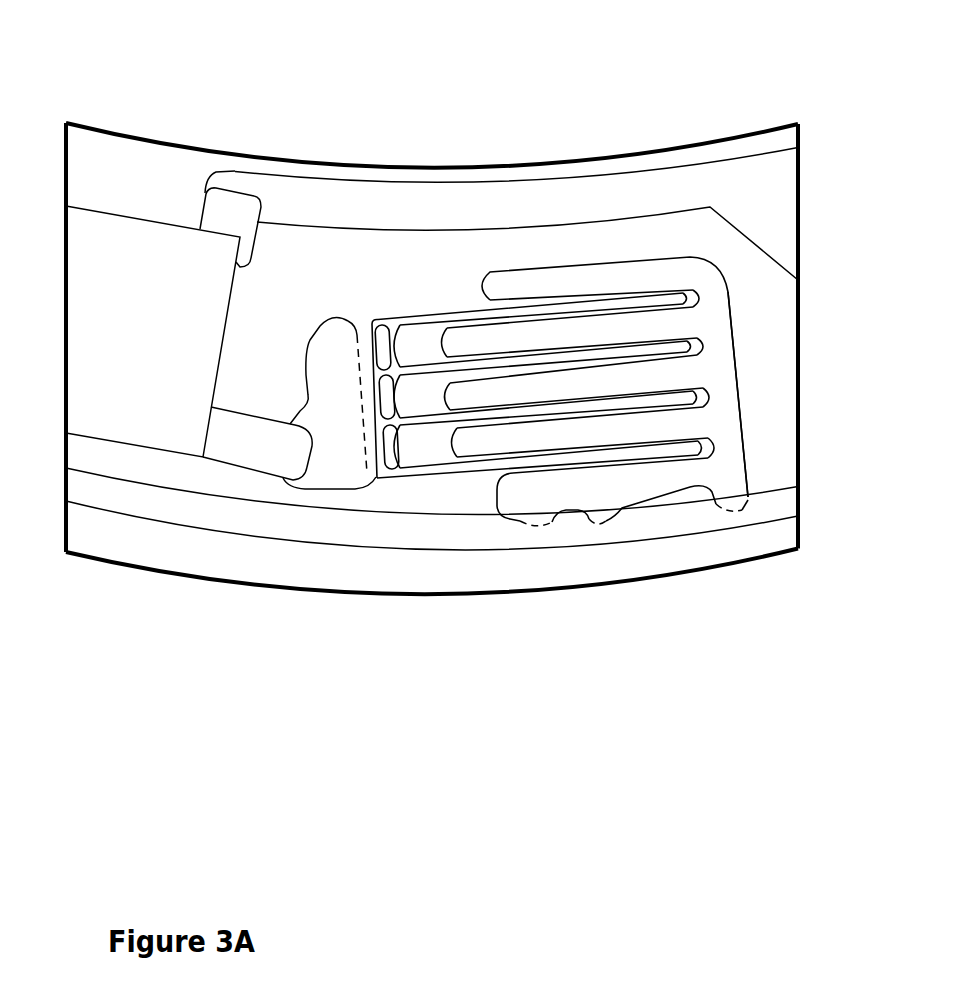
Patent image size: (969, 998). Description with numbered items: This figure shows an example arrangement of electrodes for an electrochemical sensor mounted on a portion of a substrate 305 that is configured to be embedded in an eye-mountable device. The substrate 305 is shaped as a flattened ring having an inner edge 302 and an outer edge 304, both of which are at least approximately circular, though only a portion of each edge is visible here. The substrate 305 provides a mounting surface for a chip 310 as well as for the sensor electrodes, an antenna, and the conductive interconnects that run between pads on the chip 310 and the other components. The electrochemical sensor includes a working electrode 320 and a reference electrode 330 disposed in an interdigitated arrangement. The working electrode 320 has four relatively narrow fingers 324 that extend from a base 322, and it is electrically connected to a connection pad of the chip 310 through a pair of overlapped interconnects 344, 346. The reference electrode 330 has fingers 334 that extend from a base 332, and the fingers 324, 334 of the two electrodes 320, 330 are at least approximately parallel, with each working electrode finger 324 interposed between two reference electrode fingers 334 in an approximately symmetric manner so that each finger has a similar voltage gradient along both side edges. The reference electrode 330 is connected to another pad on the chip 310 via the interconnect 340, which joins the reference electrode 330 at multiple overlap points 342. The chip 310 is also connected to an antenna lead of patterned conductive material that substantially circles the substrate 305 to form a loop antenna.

The inner edge 302 is at (462, 164).
The outer edge 304 is at (540, 592).
The substrate 305 is at (167, 144).
The chip 310 is at (127, 349).
The working electrode 320 is at (395, 315).
The base 322 is at (384, 470).
The fingers 324 is at (473, 362).
The reference electrode 330 is at (744, 441).
The base 332 is at (720, 400).
The fingers 334 is at (668, 323).
The interconnect 340 is at (307, 540).
The overlap points 342 is at (737, 510).
The interconnect 344 is at (314, 413).
The interconnect 346 is at (258, 416).